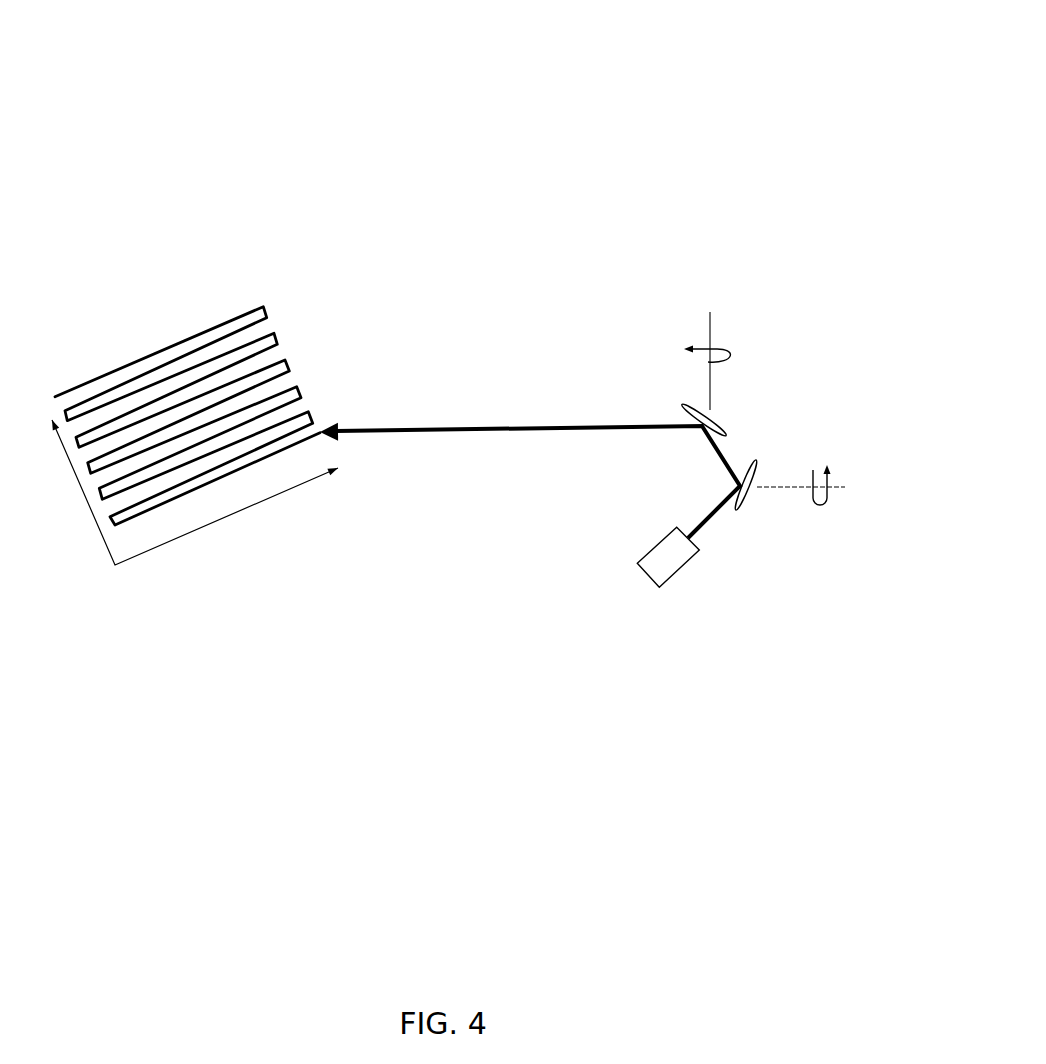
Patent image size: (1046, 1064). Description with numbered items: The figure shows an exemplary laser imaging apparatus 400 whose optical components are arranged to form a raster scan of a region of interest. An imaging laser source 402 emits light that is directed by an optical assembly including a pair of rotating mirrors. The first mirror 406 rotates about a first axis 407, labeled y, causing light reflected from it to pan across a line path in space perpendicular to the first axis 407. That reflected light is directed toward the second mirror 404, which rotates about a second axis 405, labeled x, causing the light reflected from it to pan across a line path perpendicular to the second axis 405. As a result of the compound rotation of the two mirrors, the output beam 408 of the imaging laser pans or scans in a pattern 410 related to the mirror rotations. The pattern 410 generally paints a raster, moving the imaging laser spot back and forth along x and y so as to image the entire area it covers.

The laser imaging apparatus 400 is at (728, 138).
The imaging laser source 402 is at (690, 564).
The second mirror 404 is at (680, 400).
The second axis 405 is at (697, 310).
The first mirror 406 is at (748, 520).
The first axis 407 is at (838, 466).
The output beam 408 is at (515, 425).
The pattern 410 is at (173, 367).